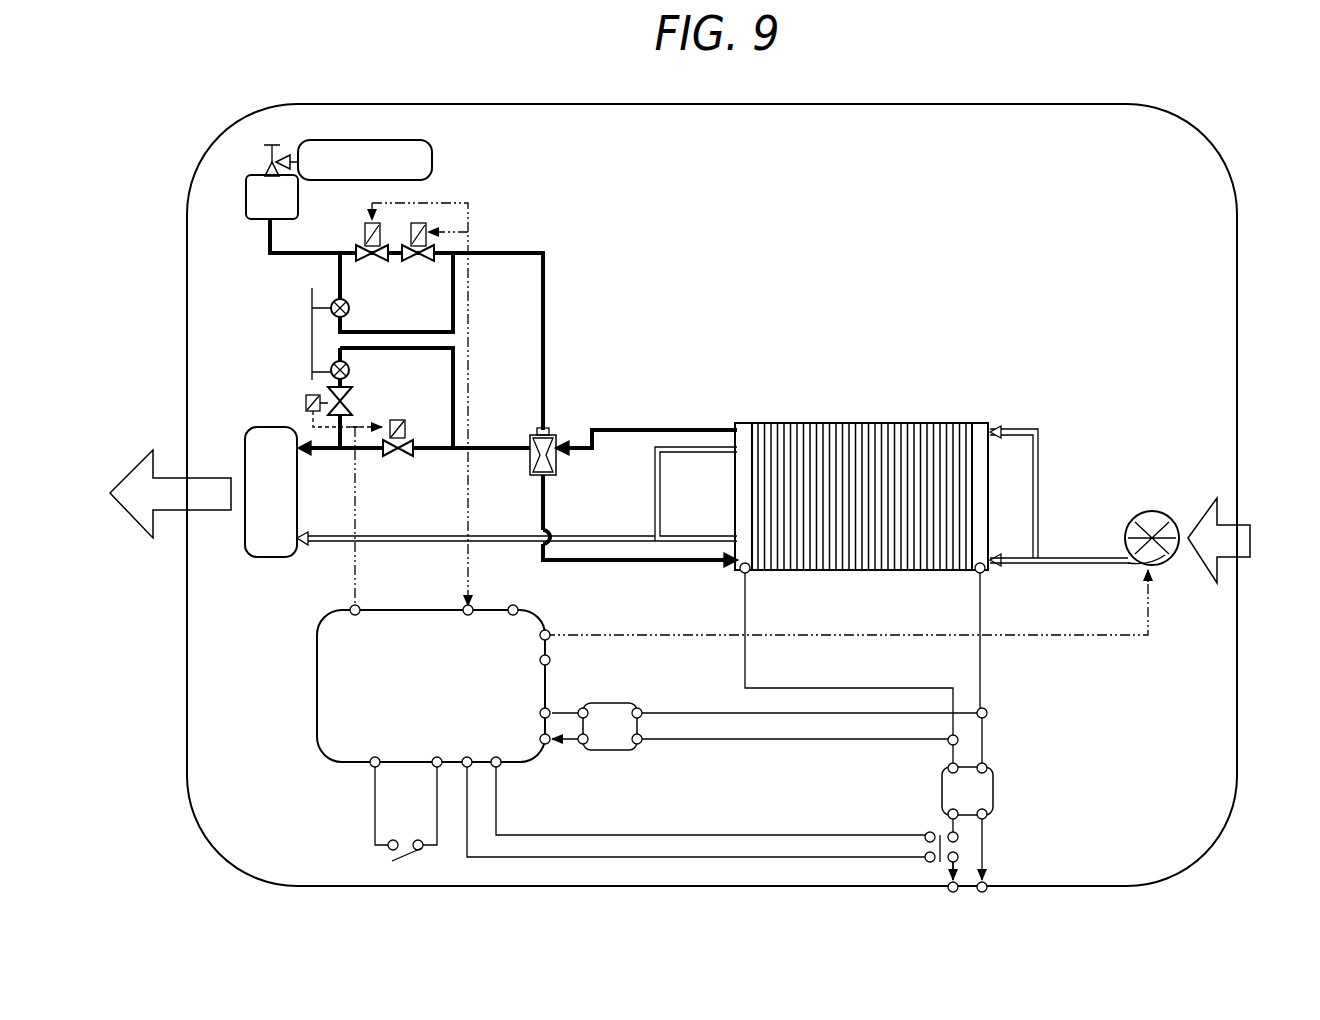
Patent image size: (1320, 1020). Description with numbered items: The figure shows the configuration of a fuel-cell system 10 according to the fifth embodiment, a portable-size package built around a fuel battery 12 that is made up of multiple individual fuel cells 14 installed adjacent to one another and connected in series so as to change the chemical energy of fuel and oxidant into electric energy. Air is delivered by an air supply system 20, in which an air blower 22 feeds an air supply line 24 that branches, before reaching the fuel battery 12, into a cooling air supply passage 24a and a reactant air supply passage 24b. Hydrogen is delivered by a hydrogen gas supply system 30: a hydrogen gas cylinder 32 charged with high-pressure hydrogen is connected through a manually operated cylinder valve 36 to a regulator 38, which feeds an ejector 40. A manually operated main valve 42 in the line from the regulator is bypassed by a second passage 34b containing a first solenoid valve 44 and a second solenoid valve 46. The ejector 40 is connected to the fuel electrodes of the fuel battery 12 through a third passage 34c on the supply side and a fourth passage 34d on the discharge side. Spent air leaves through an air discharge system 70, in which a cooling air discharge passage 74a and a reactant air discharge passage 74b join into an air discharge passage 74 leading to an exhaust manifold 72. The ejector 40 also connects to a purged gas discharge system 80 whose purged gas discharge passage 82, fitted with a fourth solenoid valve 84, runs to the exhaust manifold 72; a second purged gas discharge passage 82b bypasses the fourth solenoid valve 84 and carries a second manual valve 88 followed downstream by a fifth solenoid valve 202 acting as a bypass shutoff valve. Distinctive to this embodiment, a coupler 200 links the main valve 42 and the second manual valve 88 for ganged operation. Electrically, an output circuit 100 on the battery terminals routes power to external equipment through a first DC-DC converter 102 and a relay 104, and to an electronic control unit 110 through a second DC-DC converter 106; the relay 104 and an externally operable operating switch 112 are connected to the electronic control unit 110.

The fuel-cell system 10 is at (1240, 213).
The fuel battery 12 is at (805, 422).
The fuel cells 14 is at (882, 424).
The air supply system 20 is at (1100, 476).
The air blower 22 is at (1152, 511).
The air supply line 24 is at (1075, 567).
The cooling air supply passage 24a is at (1013, 565).
The reactant air supply passage 24b is at (1025, 429).
The hydrogen gas supply system 30 is at (520, 242).
The hydrogen gas cylinder 32 is at (390, 140).
The second passage 34b is at (350, 251).
The third passage 34c is at (456, 302).
The fourth passage 34d is at (637, 430).
The cylinder valve 36 is at (268, 164).
The regulator 38 is at (272, 197).
The ejector 40 is at (550, 428).
The main valve 42 is at (330, 302).
The first solenoid valve 44 is at (364, 263).
The second solenoid valve 46 is at (412, 263).
The air discharge system 70 is at (330, 543).
The exhaust manifold 72 is at (271, 492).
The air discharge passage 74 is at (388, 546).
The cooling air discharge passage 74a is at (684, 540).
The reactant air discharge passage 74b is at (703, 448).
The purged gas discharge system 80 is at (340, 458).
The purged gas discharge passage 82 is at (425, 452).
The second purged gas discharge passage 82b is at (458, 408).
The fourth solenoid valve 84 is at (386, 457).
The second manual valve 88 is at (352, 370).
The output circuit 100 is at (1005, 685).
The first DC-DC converter 102 is at (967, 845).
The relay 104 is at (935, 828).
The second DC-DC converter 106 is at (597, 726).
The electronic control unit 110 is at (317, 688).
The operating switch 112 is at (385, 860).
The coupler 200 is at (312, 338).
The fifth solenoid valve 202 is at (352, 410).